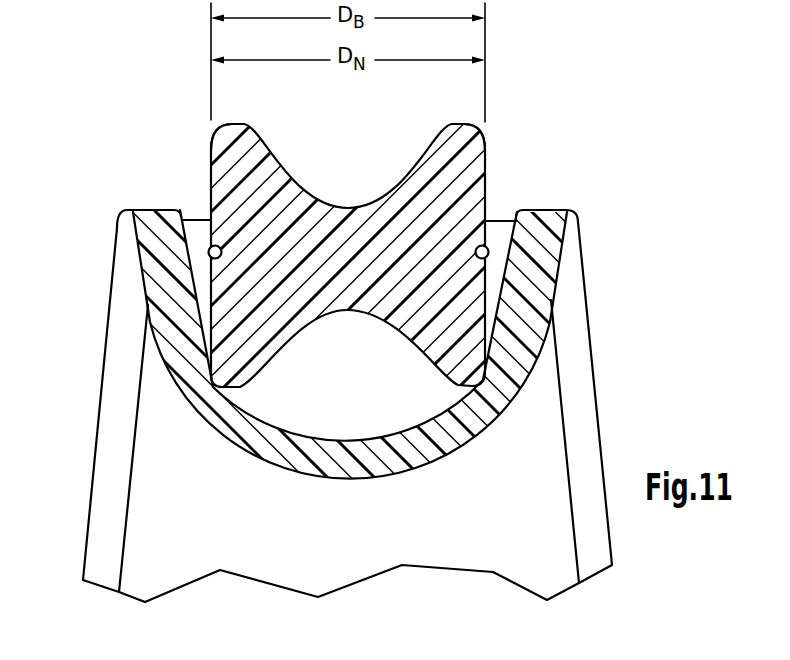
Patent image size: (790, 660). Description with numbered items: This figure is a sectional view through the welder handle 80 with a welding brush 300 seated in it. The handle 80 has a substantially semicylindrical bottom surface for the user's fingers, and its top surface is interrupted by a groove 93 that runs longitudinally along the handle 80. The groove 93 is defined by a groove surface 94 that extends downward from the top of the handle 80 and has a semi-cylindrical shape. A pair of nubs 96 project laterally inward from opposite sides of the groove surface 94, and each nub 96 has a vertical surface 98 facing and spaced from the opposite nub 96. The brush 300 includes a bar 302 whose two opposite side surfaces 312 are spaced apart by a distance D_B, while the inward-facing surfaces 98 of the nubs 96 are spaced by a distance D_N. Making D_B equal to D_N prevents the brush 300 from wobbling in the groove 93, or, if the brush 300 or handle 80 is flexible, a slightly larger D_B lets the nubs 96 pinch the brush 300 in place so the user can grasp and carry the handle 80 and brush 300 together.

The welding brush 300 is at (492, 118).
The handle 80 is at (148, 210).
The nubs 96 is at (193, 218).
The vertical surface 98 is at (210, 263).
The bar 302 is at (427, 157).
The side surfaces 312 is at (210, 167).
The groove surface 94 is at (300, 432).
The groove 93 is at (353, 408).